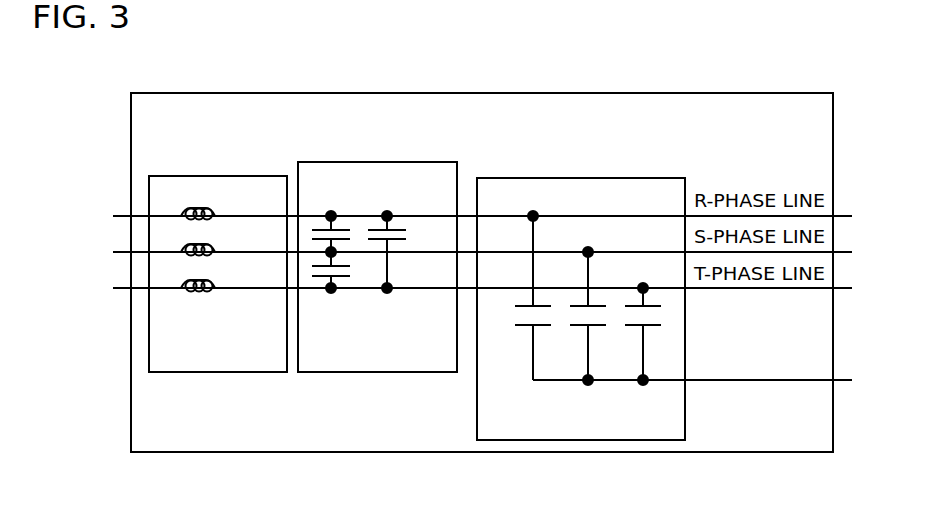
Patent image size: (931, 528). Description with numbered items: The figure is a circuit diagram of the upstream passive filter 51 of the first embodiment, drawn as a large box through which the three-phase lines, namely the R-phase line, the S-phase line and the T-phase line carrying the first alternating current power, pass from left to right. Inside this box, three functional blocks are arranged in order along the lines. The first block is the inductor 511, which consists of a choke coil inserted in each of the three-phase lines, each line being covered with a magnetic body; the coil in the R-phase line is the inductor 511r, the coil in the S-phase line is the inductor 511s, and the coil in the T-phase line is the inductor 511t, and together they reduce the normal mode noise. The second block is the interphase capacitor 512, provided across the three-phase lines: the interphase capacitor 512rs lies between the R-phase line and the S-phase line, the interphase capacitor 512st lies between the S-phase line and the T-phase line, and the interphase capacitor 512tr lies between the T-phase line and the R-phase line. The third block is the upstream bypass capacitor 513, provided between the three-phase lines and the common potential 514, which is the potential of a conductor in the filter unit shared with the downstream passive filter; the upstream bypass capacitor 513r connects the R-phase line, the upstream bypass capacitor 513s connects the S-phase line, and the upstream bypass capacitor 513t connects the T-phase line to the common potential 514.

The upstream passive filter 51 is at (330, 92).
The inductor 511 is at (223, 174).
The inductor 511r is at (238, 205).
The inductor 511s is at (238, 241).
The inductor 511t is at (238, 277).
The interphase capacitor 512 is at (358, 160).
The interphase capacitor 512rs is at (352, 202).
The interphase capacitor 512st is at (322, 278).
The interphase capacitor 512tr is at (403, 221).
The upstream bypass capacitor 513 is at (524, 177).
The upstream bypass capacitor 513r is at (522, 328).
The upstream bypass capacitor 513s is at (577, 328).
The upstream bypass capacitor 513t is at (631, 328).
The common potential 514 is at (742, 382).